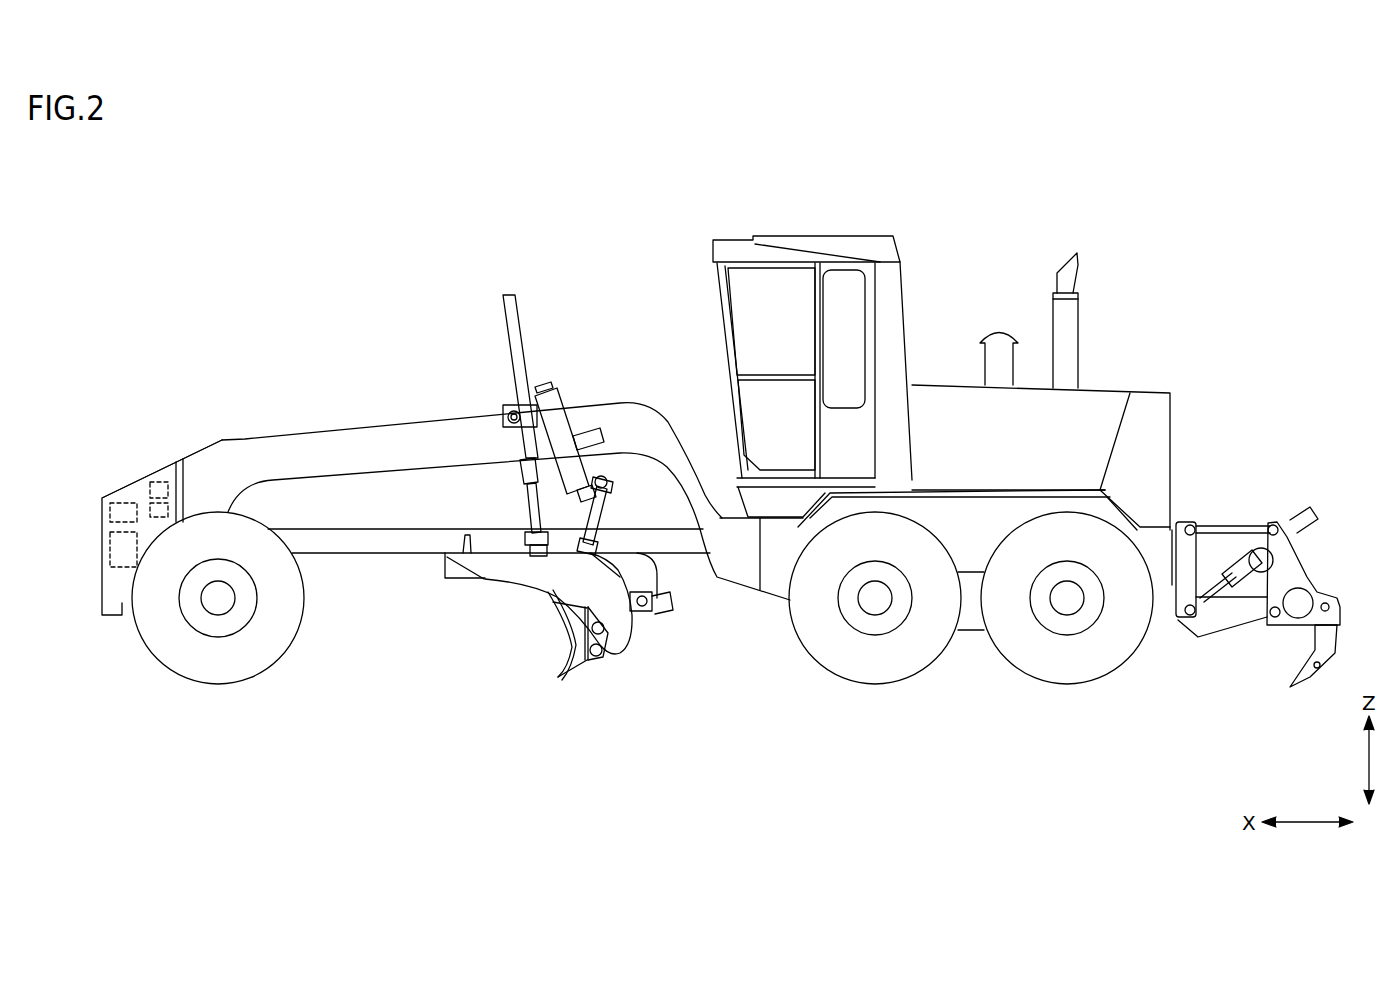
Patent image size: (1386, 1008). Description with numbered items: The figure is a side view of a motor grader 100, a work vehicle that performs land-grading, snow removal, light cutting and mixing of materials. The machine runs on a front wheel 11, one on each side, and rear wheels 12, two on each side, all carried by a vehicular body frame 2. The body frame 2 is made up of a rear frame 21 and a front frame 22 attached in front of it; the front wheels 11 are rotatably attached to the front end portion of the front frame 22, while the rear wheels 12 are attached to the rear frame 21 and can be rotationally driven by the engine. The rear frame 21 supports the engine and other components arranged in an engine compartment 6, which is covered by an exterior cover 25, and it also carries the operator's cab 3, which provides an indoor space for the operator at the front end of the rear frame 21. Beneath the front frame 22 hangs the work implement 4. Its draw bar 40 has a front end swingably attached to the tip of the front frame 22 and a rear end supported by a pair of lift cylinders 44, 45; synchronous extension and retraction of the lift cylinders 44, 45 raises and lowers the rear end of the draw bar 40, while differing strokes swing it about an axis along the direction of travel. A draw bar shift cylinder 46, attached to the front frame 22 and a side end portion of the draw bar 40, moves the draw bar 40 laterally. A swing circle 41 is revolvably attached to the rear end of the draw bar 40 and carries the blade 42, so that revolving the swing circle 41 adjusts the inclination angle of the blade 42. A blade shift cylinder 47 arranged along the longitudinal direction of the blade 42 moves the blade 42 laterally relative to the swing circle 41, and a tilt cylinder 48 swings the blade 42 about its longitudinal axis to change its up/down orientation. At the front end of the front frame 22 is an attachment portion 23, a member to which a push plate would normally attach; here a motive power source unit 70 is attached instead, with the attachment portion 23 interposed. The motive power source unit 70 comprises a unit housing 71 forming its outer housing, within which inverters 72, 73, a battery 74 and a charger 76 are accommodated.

The motor grader 100 is at (272, 240).
The vehicular body frame 2 is at (578, 308).
The operator's cab 3 is at (736, 218).
The work implement 4 is at (520, 676).
The engine compartment 6 is at (1034, 406).
The front wheel 11 is at (222, 668).
The rear wheel 12 is at (883, 668).
The rear frame 21 is at (773, 578).
The front frame 22 is at (350, 438).
The attachment portion 23 is at (186, 476).
The exterior cover 25 is at (1118, 393).
The draw bar 40 is at (383, 545).
The swing circle 41 is at (457, 573).
The blade 42 is at (567, 633).
The lift cylinder 44 is at (512, 425).
The lift cylinder 45 is at (502, 318).
The draw bar shift cylinder 46 is at (598, 527).
The blade shift cylinder 47 is at (605, 633).
The tilt cylinder 48 is at (662, 613).
The motive power source unit 70 is at (97, 484).
The unit housing 71 is at (125, 487).
The inverter 72 is at (158, 481).
The inverter 73 is at (148, 514).
The battery 74 is at (109, 551).
The charger 76 is at (109, 517).